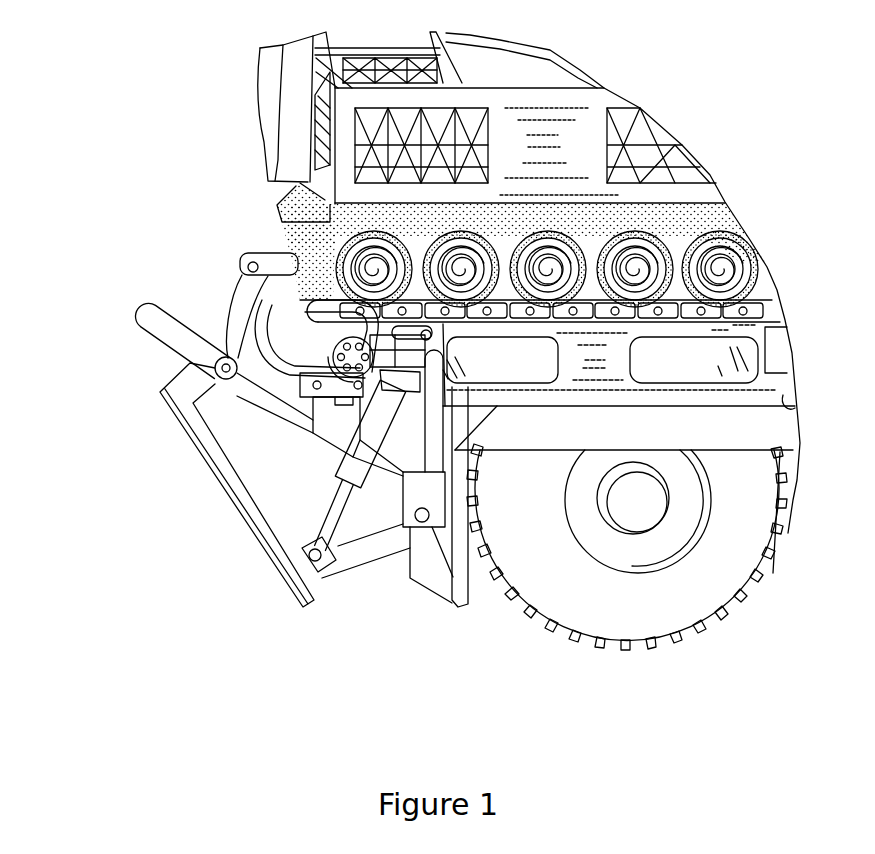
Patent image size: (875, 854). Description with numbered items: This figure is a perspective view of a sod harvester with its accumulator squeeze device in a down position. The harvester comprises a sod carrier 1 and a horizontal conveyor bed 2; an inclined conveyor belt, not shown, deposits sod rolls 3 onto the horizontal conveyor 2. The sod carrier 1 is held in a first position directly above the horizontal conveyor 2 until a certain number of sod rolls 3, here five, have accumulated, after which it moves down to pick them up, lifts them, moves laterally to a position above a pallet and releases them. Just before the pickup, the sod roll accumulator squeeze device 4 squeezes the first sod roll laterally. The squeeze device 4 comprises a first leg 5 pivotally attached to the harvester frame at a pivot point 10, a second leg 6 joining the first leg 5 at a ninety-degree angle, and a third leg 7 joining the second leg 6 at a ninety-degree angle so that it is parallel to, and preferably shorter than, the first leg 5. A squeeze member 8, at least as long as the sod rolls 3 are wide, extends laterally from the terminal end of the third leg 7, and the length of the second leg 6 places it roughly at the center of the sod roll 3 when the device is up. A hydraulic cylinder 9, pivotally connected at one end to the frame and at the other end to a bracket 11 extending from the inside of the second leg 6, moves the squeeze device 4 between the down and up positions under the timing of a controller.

The sod carrier 1 is at (588, 138).
The horizontal conveyor bed 2 is at (757, 310).
The sod rolls 3 is at (296, 214).
The sod roll accumulator squeeze device 4 is at (303, 474).
The first leg 5 is at (365, 553).
The second leg 6 is at (205, 442).
The third leg 7 is at (197, 383).
The squeeze member 8 is at (152, 320).
The hydraulic cylinder 9 is at (333, 510).
The pivot point 10 is at (425, 530).
The bracket 11 is at (320, 577).